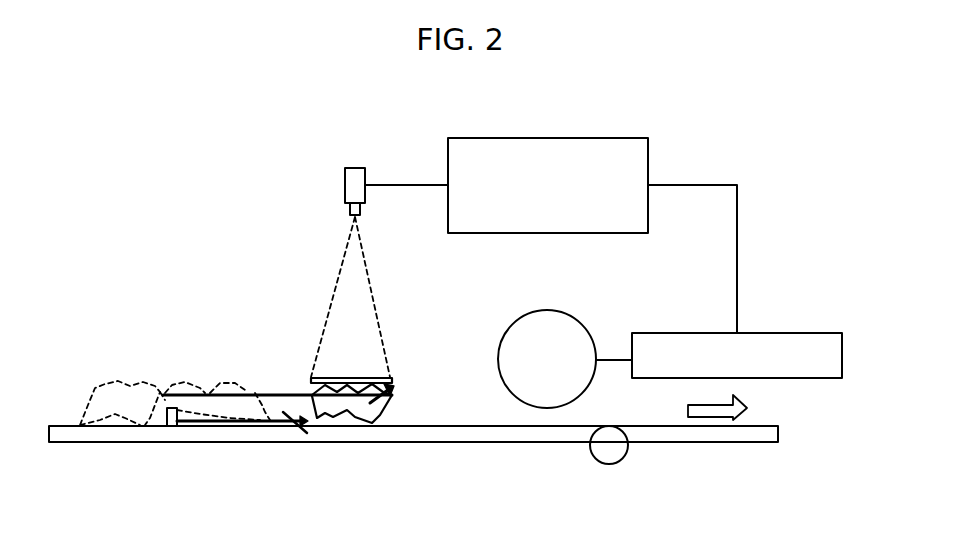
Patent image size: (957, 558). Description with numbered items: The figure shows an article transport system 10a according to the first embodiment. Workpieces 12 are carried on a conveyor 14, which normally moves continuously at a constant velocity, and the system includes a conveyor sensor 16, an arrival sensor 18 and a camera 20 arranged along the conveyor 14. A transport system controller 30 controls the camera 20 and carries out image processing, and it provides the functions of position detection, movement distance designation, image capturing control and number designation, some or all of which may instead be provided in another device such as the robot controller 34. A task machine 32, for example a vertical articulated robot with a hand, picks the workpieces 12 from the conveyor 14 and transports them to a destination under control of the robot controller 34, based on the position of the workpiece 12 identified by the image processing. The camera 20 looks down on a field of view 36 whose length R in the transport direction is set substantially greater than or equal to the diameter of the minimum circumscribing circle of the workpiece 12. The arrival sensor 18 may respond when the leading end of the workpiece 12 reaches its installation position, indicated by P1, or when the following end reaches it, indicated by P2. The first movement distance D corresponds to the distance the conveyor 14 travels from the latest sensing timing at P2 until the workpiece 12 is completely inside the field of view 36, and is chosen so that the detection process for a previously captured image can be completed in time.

The article transport system 10a is at (140, 200).
The workpiece 12 is at (387, 405).
The conveyor 14 is at (717, 445).
The conveyor sensor 16 is at (623, 460).
The arrival sensor 18 is at (163, 413).
The camera 20 is at (347, 172).
The transport system controller 30 is at (652, 150).
The task machine 32 is at (575, 312).
The robot controller 34 is at (784, 333).
The field of view 36 is at (327, 290).
The length of the field of view R is at (363, 377).
The leading-end sensing position P1 is at (110, 363).
The following-end sensing position P2 is at (228, 363).
The first movement distance D is at (263, 421).